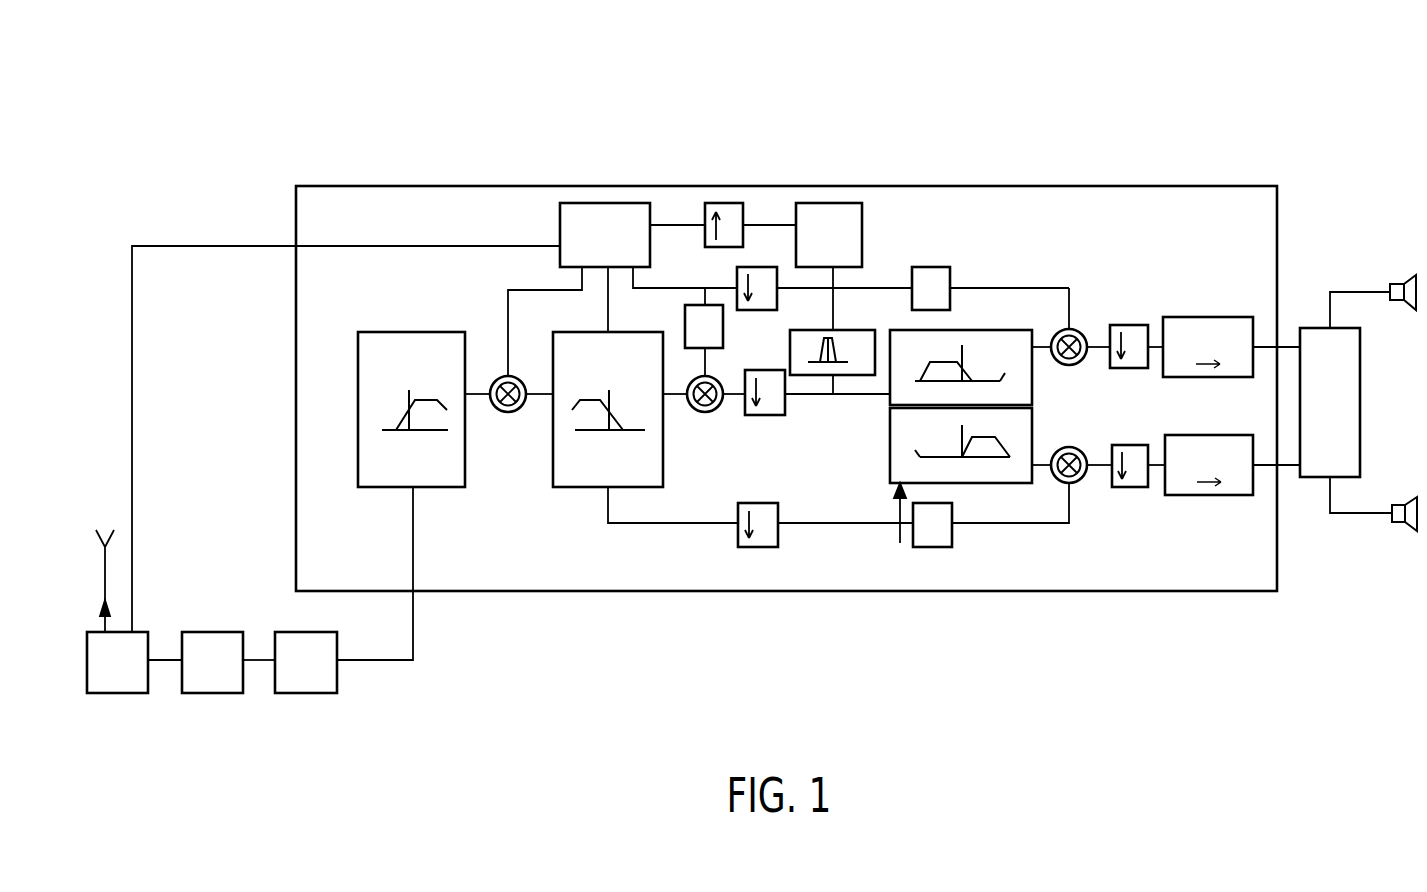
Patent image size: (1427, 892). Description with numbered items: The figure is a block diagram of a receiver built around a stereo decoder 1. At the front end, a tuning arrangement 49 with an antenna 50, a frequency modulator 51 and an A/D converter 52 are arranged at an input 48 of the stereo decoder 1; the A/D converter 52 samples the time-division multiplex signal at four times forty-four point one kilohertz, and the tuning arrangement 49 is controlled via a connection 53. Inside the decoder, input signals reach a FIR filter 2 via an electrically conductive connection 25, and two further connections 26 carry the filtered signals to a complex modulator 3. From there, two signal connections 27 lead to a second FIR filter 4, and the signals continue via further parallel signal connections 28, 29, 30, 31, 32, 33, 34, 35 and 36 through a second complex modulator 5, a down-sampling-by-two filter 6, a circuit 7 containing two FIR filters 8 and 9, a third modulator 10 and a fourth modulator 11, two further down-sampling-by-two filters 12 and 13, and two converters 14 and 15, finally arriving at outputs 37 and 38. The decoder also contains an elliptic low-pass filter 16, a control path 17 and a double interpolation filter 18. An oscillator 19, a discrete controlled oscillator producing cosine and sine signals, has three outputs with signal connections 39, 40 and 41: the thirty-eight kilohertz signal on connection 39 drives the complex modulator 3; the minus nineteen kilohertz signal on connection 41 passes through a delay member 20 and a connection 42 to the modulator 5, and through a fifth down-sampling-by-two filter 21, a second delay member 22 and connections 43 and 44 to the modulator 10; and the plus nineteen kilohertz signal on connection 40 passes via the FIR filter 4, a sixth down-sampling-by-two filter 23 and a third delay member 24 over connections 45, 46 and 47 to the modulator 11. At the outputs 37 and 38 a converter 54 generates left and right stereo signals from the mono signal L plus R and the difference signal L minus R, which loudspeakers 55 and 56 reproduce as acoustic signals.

The stereo decoder 1 is at (330, 186).
The finite impulse response filter 2 is at (394, 338).
The complex modulator 3 is at (508, 412).
The second FIR filter 4 is at (586, 487).
The second complex modulator 5 is at (705, 412).
The down-sampling-by-2 filter 6 is at (768, 415).
The circuit 7 is at (900, 527).
The FIR filter 8 is at (900, 400).
The FIR filter 9 is at (1022, 483).
The third modulator 10 is at (1074, 328).
The fourth modulator 11 is at (1080, 481).
The down-sampling-by-2 filter 12 is at (1128, 325).
The down-sampling-by-2 filter 13 is at (1130, 445).
The converter 14 is at (1213, 317).
The converter 15 is at (1213, 495).
The elliptic low-pass filter 16 is at (858, 335).
The control path 17 is at (833, 203).
The double interpolation filter 18 is at (722, 203).
The oscillator 19 is at (608, 203).
The delay member 20 is at (685, 318).
The fifth down-sampling-by-2 filter 21 is at (767, 267).
The second delay member 22 is at (943, 267).
The sixth down-sampling-by-2 filter 23 is at (766, 548).
The third delay member 24 is at (938, 547).
The electrically conductive connection 25 is at (413, 558).
The electrically conductive connections 26 is at (481, 392).
The signal connections 27 is at (541, 396).
The signal connection 28 is at (672, 396).
The signal connection 29 is at (735, 396).
The signal connection 30 is at (858, 396).
The signal connection 31 is at (1040, 460).
The signal connection 32 is at (1041, 332).
The signal connection 33 is at (1097, 465).
The signal connection 34 is at (1095, 342).
The signal connection 35 is at (1157, 468).
The signal connection 36 is at (1154, 342).
The output 37 is at (1292, 362).
The output 38 is at (1291, 450).
The signal connection 39 is at (515, 290).
The signal connection 40 is at (608, 310).
The signal connection 41 is at (656, 288).
The connection 42 is at (705, 360).
The connection 43 is at (900, 288).
The connection 44 is at (1020, 288).
The connection 45 is at (635, 525).
The connection 46 is at (852, 525).
The connection 47 is at (982, 525).
The input 48 is at (404, 612).
The tuning arrangement 49 is at (122, 693).
The antenna 50 is at (105, 575).
The frequency modulator 51 is at (212, 693).
The A/D converter 52 is at (302, 693).
The connection 53 is at (203, 246).
The converter 54 is at (1320, 328).
The loudspeaker 55 is at (1398, 283).
The loudspeaker 56 is at (1400, 524).